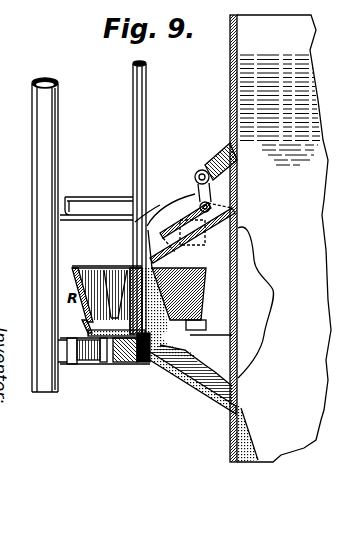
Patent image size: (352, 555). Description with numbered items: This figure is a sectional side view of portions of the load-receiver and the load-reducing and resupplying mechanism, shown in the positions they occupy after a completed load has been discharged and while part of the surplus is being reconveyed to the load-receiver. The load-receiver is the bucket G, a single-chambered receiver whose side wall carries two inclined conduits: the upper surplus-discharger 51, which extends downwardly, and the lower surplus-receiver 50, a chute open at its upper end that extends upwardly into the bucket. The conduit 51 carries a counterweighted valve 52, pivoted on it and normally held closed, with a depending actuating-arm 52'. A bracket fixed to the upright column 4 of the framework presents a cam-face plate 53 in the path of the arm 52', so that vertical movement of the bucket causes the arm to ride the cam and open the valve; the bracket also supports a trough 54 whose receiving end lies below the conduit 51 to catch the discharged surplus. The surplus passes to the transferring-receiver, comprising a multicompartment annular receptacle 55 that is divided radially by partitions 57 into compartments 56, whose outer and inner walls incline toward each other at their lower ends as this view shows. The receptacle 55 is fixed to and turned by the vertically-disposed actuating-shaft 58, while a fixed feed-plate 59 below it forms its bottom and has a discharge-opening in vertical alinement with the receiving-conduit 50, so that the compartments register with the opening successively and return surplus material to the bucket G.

The end frame or column 4 is at (53, 137).
The actuating-shaft 58 is at (147, 107).
The trough 54 is at (146, 228).
The surplus-discharger conduit 51 is at (233, 155).
The counterweighted valve 52 is at (207, 152).
The depending actuating-arm 52' is at (173, 192).
The cam or cam-face plate 53 is at (228, 231).
The multicompartment annular receptacle 55 is at (72, 272).
The compartments 56 is at (96, 274).
The partitions 57 is at (117, 275).
The feed-plate 59 is at (84, 323).
The surplus-receiver conduit 50 is at (203, 393).
The bucket G is at (280, 238).